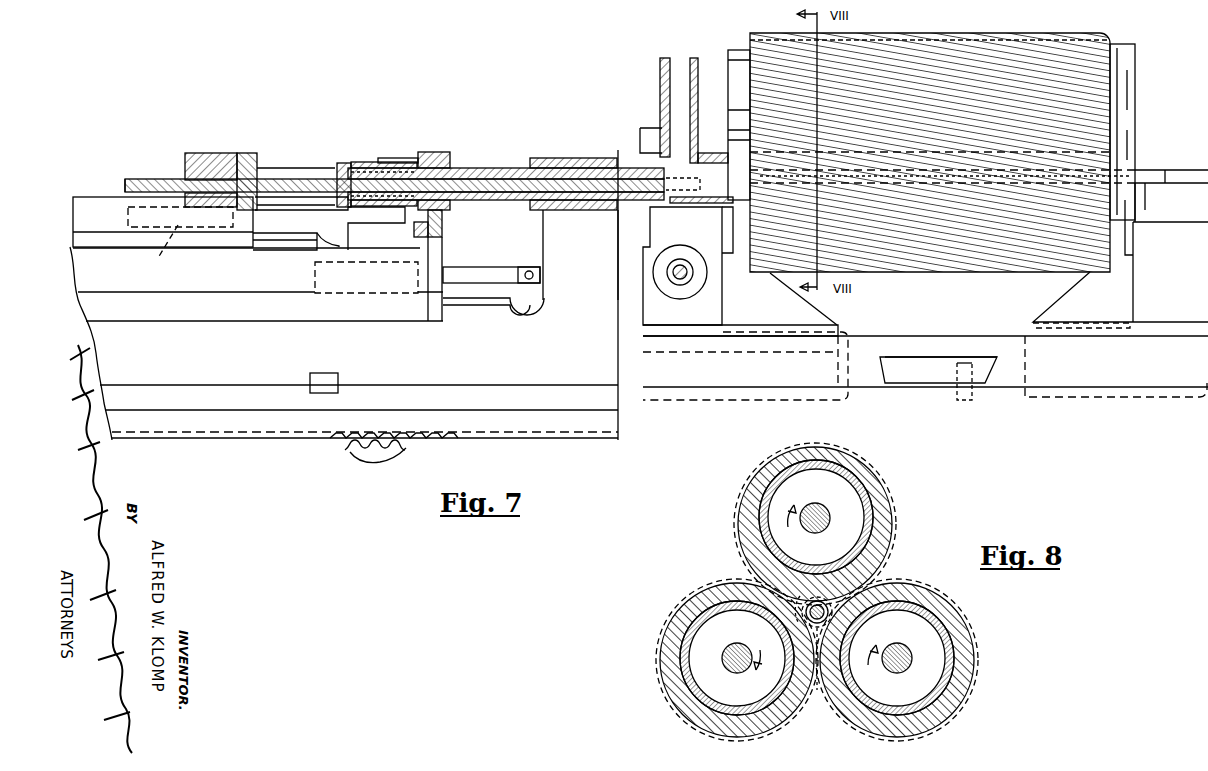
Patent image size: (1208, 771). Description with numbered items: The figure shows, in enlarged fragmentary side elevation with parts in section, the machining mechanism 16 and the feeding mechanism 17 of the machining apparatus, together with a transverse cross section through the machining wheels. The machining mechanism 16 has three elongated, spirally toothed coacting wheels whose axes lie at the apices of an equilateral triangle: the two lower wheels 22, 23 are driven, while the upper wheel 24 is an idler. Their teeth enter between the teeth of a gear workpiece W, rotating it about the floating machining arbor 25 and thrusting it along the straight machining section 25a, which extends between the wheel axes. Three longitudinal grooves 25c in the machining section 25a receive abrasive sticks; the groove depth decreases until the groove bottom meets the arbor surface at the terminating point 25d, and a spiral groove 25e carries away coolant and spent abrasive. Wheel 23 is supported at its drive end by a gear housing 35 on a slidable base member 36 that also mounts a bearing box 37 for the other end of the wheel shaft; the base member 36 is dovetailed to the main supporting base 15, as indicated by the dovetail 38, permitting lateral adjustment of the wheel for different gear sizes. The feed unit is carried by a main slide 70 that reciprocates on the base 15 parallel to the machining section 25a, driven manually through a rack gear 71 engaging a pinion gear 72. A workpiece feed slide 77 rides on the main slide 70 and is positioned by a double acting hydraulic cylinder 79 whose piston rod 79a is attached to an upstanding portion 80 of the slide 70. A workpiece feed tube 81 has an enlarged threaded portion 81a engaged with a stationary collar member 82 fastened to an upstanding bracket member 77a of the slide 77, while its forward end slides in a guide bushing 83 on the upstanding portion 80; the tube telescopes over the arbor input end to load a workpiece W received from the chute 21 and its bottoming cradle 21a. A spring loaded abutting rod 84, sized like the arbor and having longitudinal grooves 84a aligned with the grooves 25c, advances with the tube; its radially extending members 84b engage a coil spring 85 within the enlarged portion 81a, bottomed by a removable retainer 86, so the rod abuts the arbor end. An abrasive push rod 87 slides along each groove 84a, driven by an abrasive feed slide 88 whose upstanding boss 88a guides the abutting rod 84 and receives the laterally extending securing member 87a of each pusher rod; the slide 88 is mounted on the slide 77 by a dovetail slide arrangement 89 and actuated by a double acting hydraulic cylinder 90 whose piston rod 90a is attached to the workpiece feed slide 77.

In FIG. 7, the main supporting base 15 is at (1178, 410).
In FIG. 7, the machining mechanism 16 is at (982, 28).
In FIG. 7, the feeding mechanism 17 is at (312, 152).
In FIG. 7, the chute 21 is at (660, 85).
In FIG. 7, the bottoming stop member or cradle 21a is at (702, 154).
In FIG. 8, the machining wheel 22 is at (948, 697).
In FIG. 7, the machining wheel 23 is at (970, 262).
In FIG. 8, the machining wheel 23 is at (692, 698).
In FIG. 7, the machining wheel 24 is at (1086, 52).
In FIG. 8, the machining wheel 24 is at (872, 497).
In FIG. 7, the machining arbor 25 is at (1172, 170).
In FIG. 8, the machining arbor 25 is at (827, 680).
In FIG. 7, the straight machining section 25a is at (1138, 170).
In FIG. 8, the straight machining section 25a is at (802, 593).
In FIG. 7, the grooves 25c is at (915, 170).
In FIG. 8, the grooves 25c is at (827, 593).
In FIG. 7, the terminating point 25d is at (1075, 170).
In FIG. 7, the spiral groove 25e is at (1140, 186).
In FIG. 7, the gear housing 35 is at (712, 282).
In FIG. 7, the slidable base member 36 is at (1004, 330).
In FIG. 7, the bearing box 37 is at (1175, 300).
In FIG. 7, the dovetail 38 is at (900, 372).
In FIG. 7, the main slide 70 is at (590, 372).
In FIG. 7, the rack gear 71 is at (428, 442).
In FIG. 7, the pinion gear 72 is at (364, 451).
In FIG. 7, the workpiece feed slide 77 is at (442, 250).
In FIG. 7, the upstanding bracket member 77a is at (442, 214).
In FIG. 7, the double acting hydraulic cylinder 79 is at (383, 293).
In FIG. 7, the piston rod 79a is at (499, 275).
In FIG. 7, the upstanding portion 80 is at (548, 225).
In FIG. 7, the workpiece feed tube 81 is at (512, 168).
In FIG. 7, the enlarged cylindrical threaded portion 81a is at (372, 160).
In FIG. 7, the stationary collar member 82 is at (430, 152).
In FIG. 7, the guide bushing 83 is at (590, 158).
In FIG. 7, the abutting rod 84 is at (482, 179).
In FIG. 7, the longitudinal grooves 84a is at (144, 178).
In FIG. 7, the radially extending members 84b is at (410, 158).
In FIG. 7, the coil spring 85 is at (356, 162).
In FIG. 7, the removable retainer 86 is at (343, 164).
In FIG. 7, the abrasive push rod 87 is at (262, 178).
In FIG. 7, the laterally extending securing member 87a is at (254, 159).
In FIG. 7, the abrasive feed slide 88 is at (104, 232).
In FIG. 7, the upstanding boss 88a is at (214, 153).
In FIG. 7, the dovetail slide arrangement 89 is at (258, 240).
In FIG. 7, the double acting hydraulic cylinder 90 is at (158, 249).
In FIG. 7, the piston rod 90a is at (340, 228).
In FIG. 7, the workpiece W is at (770, 172).
In FIG. 8, the workpiece W is at (833, 600).